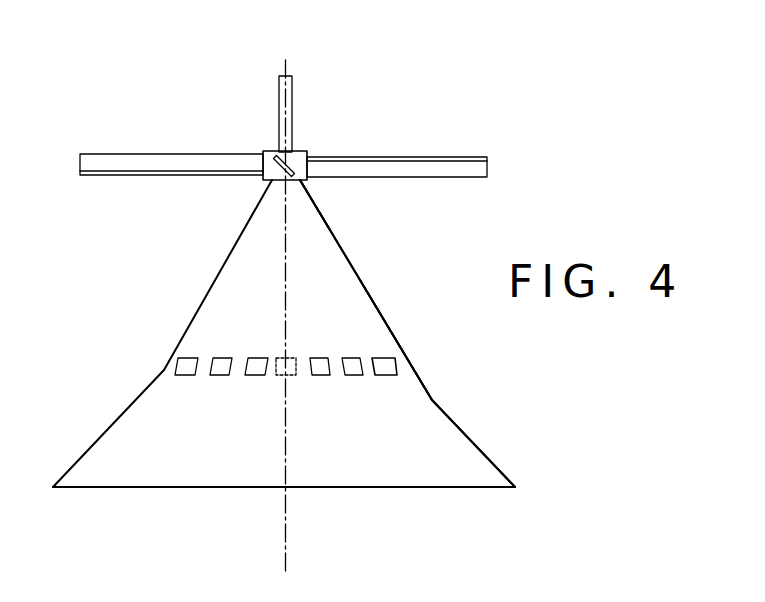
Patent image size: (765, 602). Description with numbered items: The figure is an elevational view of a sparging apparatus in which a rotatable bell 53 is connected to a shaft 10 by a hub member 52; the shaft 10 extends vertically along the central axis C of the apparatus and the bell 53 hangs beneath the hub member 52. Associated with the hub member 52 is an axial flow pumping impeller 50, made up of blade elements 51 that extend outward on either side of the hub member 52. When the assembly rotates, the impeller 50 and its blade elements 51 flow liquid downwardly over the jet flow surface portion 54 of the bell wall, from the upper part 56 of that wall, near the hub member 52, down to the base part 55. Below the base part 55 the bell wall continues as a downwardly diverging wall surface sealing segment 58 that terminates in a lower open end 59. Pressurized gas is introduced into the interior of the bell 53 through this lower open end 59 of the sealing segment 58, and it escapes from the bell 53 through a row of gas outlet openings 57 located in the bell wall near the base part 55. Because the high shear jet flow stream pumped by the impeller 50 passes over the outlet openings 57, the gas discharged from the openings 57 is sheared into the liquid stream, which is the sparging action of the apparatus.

The shaft 10 is at (295, 113).
The axial flow pumping impeller 50 is at (104, 154).
The blade elements 51 is at (429, 157).
The hub member 52 is at (302, 149).
The rotatable bell 53 is at (172, 329).
The jet flow surface portion 54 is at (357, 275).
The base part 55 is at (392, 343).
The upper part 56 is at (318, 204).
The gas outlet openings 57 is at (382, 362).
The wall surface sealing segment 58 is at (485, 452).
The lower open end 59 is at (374, 488).
The center axis C is at (284, 506).